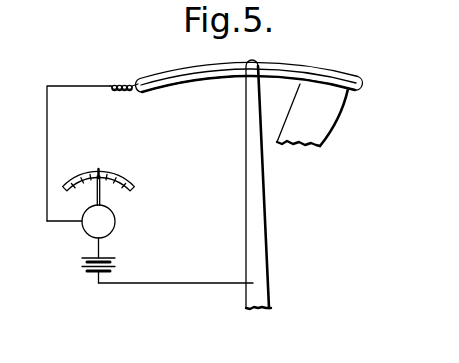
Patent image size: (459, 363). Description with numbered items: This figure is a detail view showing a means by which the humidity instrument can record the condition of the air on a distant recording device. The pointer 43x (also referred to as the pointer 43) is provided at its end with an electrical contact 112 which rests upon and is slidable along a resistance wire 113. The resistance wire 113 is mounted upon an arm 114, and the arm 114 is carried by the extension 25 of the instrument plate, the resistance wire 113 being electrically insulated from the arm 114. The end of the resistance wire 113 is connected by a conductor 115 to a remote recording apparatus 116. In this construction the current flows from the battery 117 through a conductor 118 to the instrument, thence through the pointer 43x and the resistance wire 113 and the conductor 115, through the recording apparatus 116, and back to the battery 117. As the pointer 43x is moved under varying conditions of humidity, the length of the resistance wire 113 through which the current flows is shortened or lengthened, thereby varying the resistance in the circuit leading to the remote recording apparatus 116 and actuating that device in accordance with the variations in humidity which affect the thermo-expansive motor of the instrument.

The extension 25 is at (323, 120).
The pointer 43x is at (282, 171).
The pointer 43 is at (282, 171).
The electrical contact 112 is at (257, 62).
The resistance wire 113 is at (260, 64).
The arm 114 is at (337, 68).
The conductor 115 is at (80, 85).
The remote recording apparatus 116 is at (110, 222).
The battery 117 is at (87, 272).
The conductor 118 is at (173, 285).